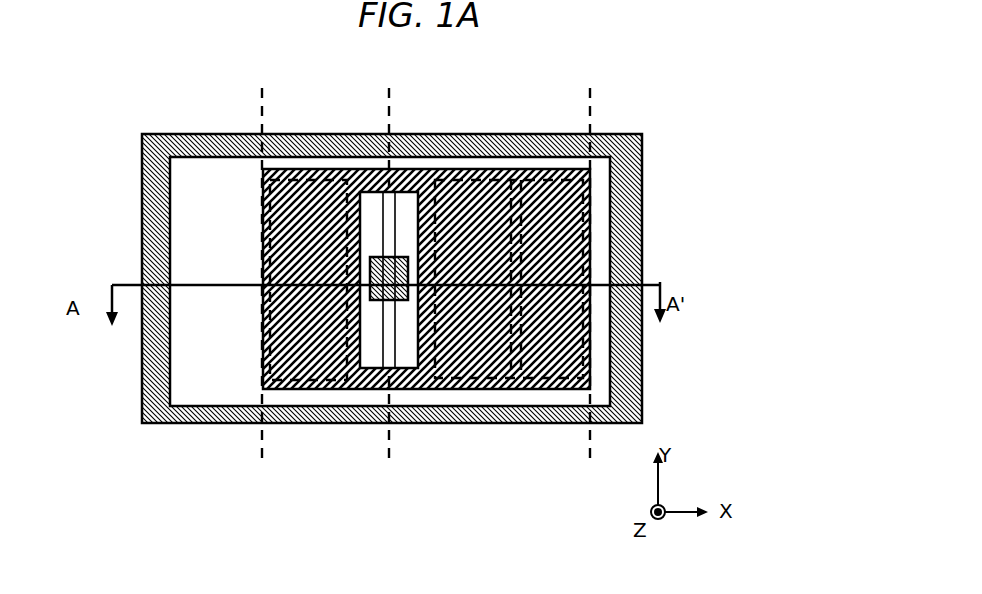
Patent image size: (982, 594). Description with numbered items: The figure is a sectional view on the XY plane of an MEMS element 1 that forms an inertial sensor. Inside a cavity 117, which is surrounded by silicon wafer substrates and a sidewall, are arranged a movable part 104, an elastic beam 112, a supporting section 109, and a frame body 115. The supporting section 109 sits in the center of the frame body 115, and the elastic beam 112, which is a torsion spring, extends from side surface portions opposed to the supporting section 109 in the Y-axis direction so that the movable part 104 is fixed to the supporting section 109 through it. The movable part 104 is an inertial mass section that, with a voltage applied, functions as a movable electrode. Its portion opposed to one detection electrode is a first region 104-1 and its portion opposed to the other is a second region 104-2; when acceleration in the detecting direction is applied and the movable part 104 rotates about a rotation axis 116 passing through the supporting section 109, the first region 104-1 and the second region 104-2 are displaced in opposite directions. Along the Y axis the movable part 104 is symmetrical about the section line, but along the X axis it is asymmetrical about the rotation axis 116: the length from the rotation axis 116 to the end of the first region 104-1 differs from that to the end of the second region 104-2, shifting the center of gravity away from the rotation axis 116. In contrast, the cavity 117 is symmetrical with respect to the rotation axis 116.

The MEMS element 1 is at (97, 105).
The movable part 104 is at (592, 200).
The first region 104-1 is at (387, 99).
The second region 104-2 is at (588, 99).
The supporting section 109 is at (400, 300).
The elastic beam 112 is at (388, 300).
The frame body 115 is at (628, 407).
The rotation axis 116 is at (388, 440).
The cavity 117 is at (247, 393).